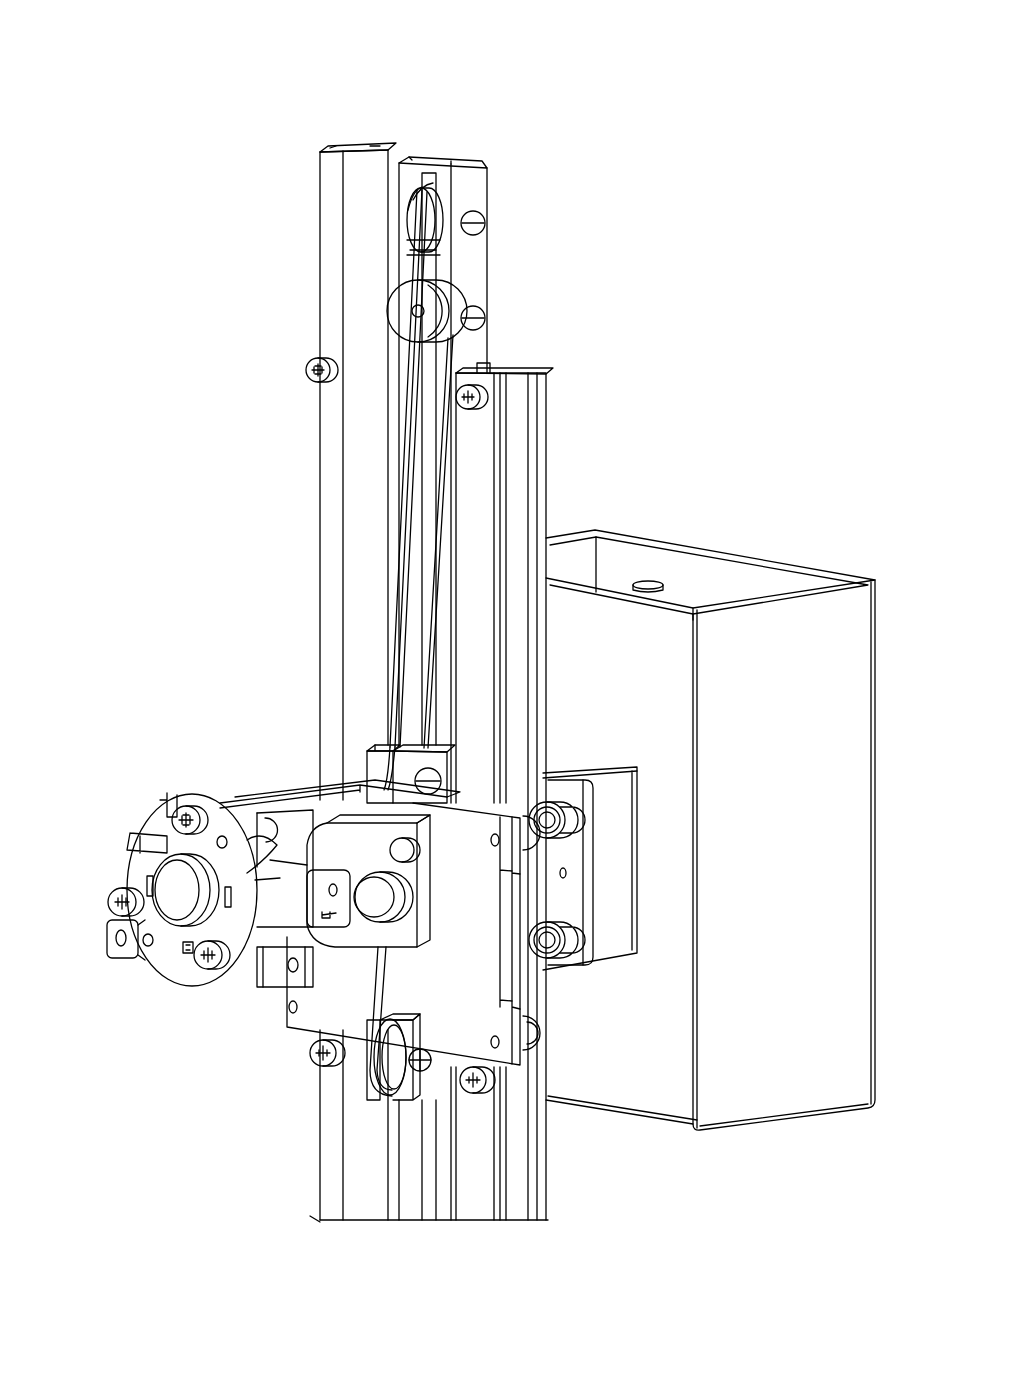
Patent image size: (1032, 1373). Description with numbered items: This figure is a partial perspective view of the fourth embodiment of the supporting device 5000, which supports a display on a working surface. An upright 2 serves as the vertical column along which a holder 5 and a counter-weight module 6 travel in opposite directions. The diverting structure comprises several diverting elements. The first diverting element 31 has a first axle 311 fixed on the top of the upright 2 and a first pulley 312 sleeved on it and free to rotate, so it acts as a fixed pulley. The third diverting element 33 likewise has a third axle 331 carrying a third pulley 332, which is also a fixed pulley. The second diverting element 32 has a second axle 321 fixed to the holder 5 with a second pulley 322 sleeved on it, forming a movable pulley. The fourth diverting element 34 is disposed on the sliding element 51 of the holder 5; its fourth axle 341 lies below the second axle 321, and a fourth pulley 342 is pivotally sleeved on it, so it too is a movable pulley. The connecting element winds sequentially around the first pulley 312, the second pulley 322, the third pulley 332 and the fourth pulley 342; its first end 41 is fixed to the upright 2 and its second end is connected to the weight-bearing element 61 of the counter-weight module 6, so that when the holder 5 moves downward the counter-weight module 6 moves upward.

The supporting device 5000 is at (385, 25).
The upright 2 is at (447, 162).
The first diverting element 31 is at (598, 222).
The first axle 311 is at (486, 222).
The first pulley 312 is at (434, 240).
The third diverting element 33 is at (598, 315).
The third axle 331 is at (486, 318).
The third pulley 332 is at (443, 330).
The first end 41 is at (447, 408).
The second diverting element 32 is at (223, 740).
The second axle 321 is at (426, 771).
The second pulley 322 is at (380, 783).
The fourth diverting element 34 is at (233, 1140).
The fourth axle 341 is at (423, 1067).
The fourth pulley 342 is at (387, 1053).
The holder 5 is at (110, 812).
The sliding element 51 is at (236, 797).
The counter-weight module 6 is at (804, 482).
The weight-bearing element 61 is at (750, 554).